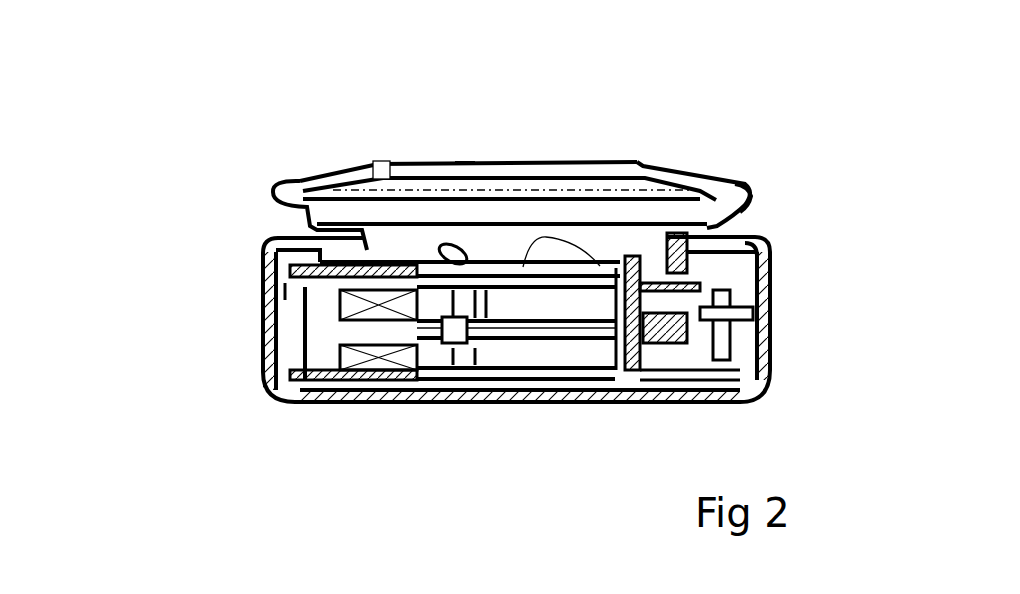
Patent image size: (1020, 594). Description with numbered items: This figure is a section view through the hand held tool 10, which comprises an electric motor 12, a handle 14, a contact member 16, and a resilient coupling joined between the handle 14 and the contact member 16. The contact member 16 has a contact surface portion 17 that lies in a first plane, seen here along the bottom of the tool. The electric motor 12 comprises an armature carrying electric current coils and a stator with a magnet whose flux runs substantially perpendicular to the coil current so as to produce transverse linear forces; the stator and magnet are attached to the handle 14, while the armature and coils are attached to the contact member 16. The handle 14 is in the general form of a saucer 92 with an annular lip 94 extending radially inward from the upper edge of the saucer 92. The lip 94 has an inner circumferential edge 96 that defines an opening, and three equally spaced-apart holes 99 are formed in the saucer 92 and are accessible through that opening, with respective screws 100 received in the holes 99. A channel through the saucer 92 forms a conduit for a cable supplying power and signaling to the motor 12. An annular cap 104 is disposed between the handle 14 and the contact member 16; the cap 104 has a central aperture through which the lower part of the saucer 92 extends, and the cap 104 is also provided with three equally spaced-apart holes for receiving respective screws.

The hand held tool 10 is at (297, 128).
The electric motor 12 is at (318, 303).
The handle 14 is at (362, 162).
The contact member 16 is at (763, 297).
The contact surface portion 17 is at (450, 401).
The saucer 92 is at (747, 181).
The annular lip 94 is at (649, 232).
The inner circumferential edge 96 is at (463, 160).
The holes 99 is at (443, 242).
The screws 100 is at (468, 247).
The annular cap 104 is at (768, 256).